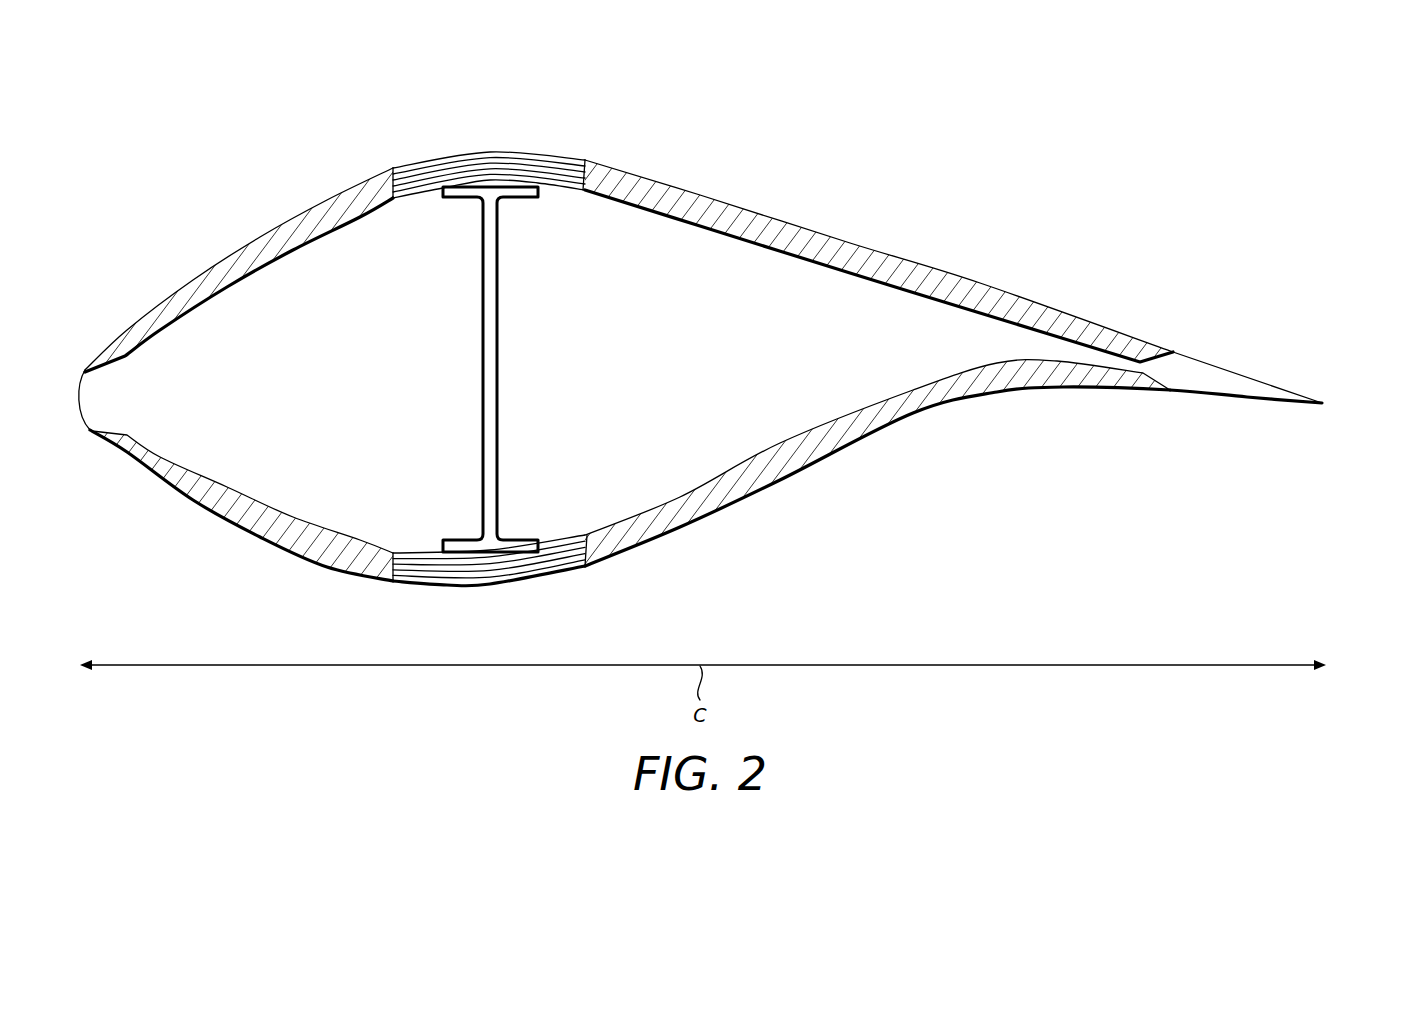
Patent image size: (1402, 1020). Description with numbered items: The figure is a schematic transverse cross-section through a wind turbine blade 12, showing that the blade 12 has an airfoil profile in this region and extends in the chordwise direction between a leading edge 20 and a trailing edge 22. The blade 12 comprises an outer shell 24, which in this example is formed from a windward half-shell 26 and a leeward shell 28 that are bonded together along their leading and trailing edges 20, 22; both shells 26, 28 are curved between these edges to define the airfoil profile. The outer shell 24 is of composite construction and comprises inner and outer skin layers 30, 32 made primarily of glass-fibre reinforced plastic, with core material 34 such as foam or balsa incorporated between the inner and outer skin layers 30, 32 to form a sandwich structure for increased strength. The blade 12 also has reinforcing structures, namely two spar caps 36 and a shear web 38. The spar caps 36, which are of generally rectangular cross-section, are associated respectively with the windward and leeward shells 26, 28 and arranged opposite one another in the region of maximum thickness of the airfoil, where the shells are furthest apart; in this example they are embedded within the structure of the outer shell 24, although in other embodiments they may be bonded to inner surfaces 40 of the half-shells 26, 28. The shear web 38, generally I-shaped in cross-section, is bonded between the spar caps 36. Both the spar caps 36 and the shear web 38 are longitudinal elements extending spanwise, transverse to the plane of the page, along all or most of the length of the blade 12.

The wind turbine blade 12 is at (292, 139).
The leading edge 20 is at (80, 397).
The trailing edge 22 is at (1326, 403).
The outer shell 24 is at (795, 222).
The windward half-shell 26 is at (655, 498).
The leeward shell 28 is at (652, 216).
The inner skin layer 30 is at (207, 273).
The outer skin layer 32 is at (183, 263).
The core material 34 is at (866, 262).
The spar caps 36 is at (487, 162).
The shear web 38 is at (499, 370).
The inner surfaces 40 is at (355, 212).